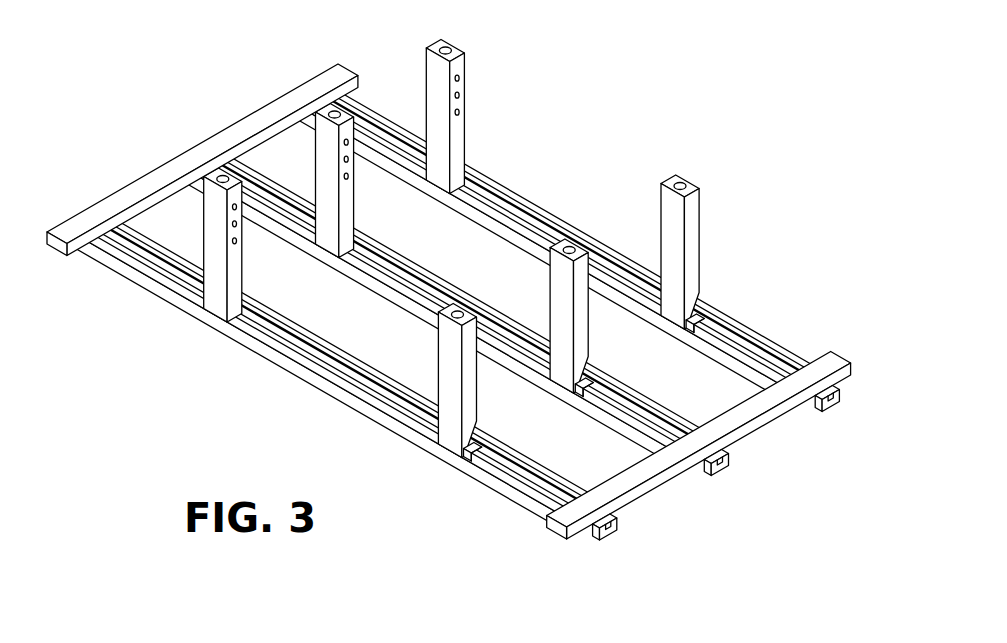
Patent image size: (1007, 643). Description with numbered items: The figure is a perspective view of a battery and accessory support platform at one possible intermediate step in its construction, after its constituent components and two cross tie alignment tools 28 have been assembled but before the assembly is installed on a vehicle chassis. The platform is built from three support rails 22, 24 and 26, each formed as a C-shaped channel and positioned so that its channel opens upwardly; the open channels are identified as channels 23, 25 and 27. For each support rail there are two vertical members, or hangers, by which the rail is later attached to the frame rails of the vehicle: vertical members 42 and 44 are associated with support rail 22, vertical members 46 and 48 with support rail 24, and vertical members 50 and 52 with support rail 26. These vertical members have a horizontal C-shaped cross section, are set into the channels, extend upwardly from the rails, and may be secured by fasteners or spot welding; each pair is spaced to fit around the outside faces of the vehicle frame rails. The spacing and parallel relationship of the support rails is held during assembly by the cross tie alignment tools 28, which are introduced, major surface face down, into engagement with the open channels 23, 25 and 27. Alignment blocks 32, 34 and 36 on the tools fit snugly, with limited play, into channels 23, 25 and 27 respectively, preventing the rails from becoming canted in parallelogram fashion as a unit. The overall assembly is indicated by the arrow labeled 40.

The support rail 22 is at (790, 333).
The open channel 23 is at (551, 205).
The support rail 24 is at (665, 395).
The open channel 25 is at (437, 273).
The support rail 26 is at (545, 457).
The open channel 27 is at (332, 347).
The cross tie alignment tool 28 is at (228, 130).
The alignment block 32 is at (841, 401).
The alignment block 34 is at (740, 470).
The alignment block 36 is at (612, 540).
The frame assembly 40 is at (476, 319).
The vertical member 42 is at (707, 208).
The vertical member 44 is at (467, 92).
The vertical member 46 is at (590, 345).
The vertical member 48 is at (353, 197).
The vertical member 50 is at (477, 382).
The vertical member 52 is at (242, 250).